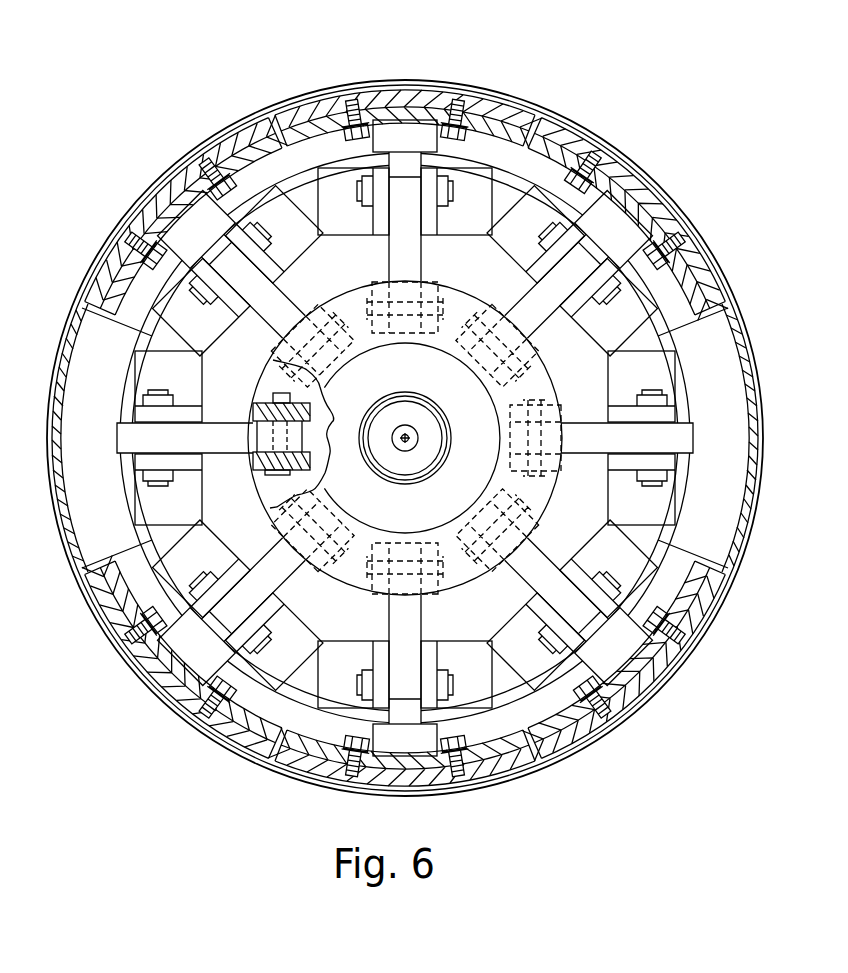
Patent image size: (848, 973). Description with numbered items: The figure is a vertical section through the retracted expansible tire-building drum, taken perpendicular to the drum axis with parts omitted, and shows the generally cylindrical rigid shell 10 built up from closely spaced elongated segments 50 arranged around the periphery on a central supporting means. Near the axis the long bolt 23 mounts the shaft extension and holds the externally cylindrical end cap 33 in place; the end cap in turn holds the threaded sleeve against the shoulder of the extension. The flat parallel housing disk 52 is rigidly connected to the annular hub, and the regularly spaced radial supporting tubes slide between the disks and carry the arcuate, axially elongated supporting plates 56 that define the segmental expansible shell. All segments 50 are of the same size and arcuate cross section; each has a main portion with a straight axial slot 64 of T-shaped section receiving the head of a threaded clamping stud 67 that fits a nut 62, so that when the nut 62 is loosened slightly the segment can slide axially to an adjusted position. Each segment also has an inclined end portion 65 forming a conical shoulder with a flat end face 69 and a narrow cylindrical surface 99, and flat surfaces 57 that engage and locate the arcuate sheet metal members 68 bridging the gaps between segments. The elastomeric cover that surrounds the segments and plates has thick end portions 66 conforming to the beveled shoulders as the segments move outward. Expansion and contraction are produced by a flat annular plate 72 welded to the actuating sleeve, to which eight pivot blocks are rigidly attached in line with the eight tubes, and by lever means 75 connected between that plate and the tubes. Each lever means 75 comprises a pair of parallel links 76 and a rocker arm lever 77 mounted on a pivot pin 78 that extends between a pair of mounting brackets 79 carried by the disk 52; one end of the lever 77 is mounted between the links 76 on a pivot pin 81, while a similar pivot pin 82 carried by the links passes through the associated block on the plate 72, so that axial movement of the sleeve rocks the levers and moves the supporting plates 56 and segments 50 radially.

The rigid shell 10 is at (389, 438).
The long bolt 23 is at (421, 405).
The end cap 33 is at (405, 450).
The segments 50 is at (400, 411).
The disk 52 is at (419, 419).
The supporting plates 56 is at (297, 438).
The flat surfaces 57 is at (401, 438).
The nut 62 is at (404, 438).
The axial slot 64 is at (386, 461).
The inclined end portion 65 is at (121, 565).
The thick end portions 66 is at (409, 438).
The clamping stud 67 is at (431, 426).
The sheet metal members 68 is at (404, 438).
The flat end face 69 is at (411, 438).
The annular plate 72 is at (405, 432).
The lever means 75 is at (269, 414).
The parallel links 76 is at (425, 438).
The rocker arm lever 77 is at (462, 438).
The pivot pin 78 is at (410, 504).
The mounting brackets 79 is at (436, 438).
The pivot pin 81 is at (259, 453).
The pivot pin 82 is at (508, 438).
The narrow cylindrical surface 99 is at (185, 438).